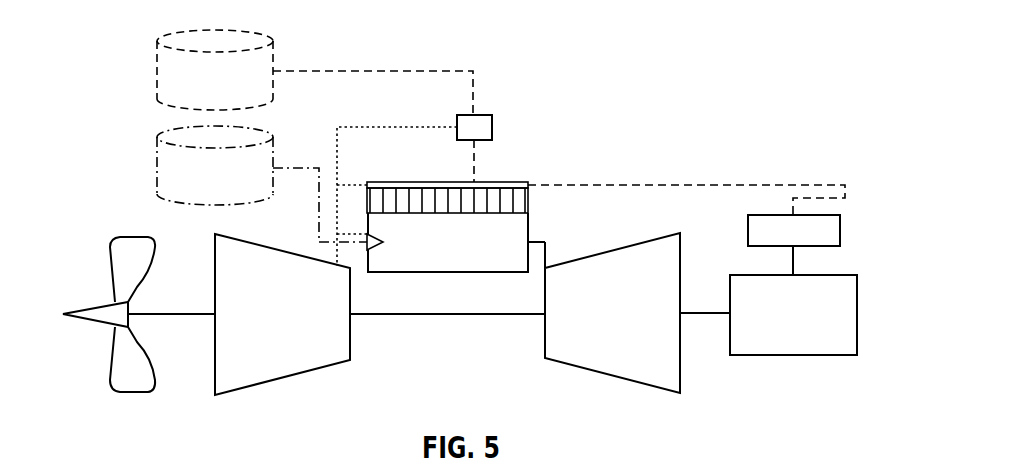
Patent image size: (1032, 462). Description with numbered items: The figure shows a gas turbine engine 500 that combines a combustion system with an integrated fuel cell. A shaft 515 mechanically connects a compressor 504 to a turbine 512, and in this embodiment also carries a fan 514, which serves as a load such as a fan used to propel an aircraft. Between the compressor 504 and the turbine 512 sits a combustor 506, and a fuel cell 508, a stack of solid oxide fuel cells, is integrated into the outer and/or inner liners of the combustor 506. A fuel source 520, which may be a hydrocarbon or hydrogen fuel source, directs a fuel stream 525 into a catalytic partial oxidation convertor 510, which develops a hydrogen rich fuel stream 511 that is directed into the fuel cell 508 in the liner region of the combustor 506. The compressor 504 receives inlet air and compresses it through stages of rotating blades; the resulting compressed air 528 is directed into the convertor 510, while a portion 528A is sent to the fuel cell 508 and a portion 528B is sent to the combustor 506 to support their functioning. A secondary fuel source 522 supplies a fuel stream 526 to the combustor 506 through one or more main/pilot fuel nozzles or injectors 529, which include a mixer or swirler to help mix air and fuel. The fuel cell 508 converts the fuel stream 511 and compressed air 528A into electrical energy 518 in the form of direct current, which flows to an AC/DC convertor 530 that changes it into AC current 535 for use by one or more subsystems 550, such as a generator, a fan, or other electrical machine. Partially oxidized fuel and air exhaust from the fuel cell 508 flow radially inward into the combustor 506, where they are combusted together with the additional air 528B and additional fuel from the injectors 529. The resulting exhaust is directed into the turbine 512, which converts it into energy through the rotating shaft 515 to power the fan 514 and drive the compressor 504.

The gas turbine engine 500 is at (798, 54).
The compressor 504 is at (296, 375).
The combustor 506 is at (530, 233).
The fuel cell 508 is at (523, 182).
The catalytic partial oxidation convertor 510 is at (492, 113).
The hydrogen rich fuel stream 511 is at (477, 160).
The turbine 512 is at (612, 380).
The fan 514 is at (113, 264).
The shaft 515 is at (459, 316).
The electrical energy 518 is at (710, 185).
The fuel source 520 is at (157, 67).
The secondary fuel source 522 is at (157, 170).
The fuel stream 525 is at (307, 70).
The fuel stream 526 is at (318, 213).
The compressed air 528 is at (380, 127).
The compressed air portion 528A is at (350, 182).
The compressed air portion 528B is at (348, 238).
The fuel injectors 529 is at (385, 248).
The AC/DC convertor 530 is at (841, 225).
The AC current 535 is at (790, 267).
The subsystems 550 is at (829, 272).